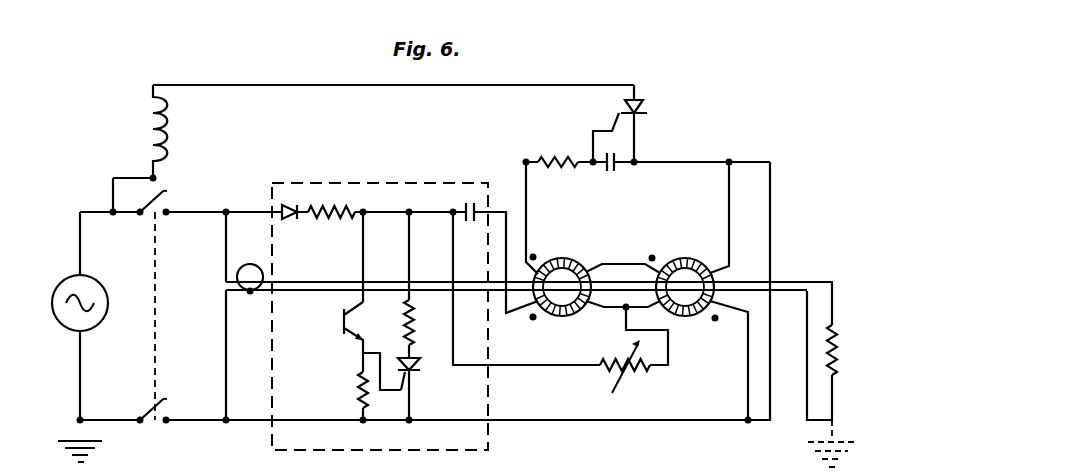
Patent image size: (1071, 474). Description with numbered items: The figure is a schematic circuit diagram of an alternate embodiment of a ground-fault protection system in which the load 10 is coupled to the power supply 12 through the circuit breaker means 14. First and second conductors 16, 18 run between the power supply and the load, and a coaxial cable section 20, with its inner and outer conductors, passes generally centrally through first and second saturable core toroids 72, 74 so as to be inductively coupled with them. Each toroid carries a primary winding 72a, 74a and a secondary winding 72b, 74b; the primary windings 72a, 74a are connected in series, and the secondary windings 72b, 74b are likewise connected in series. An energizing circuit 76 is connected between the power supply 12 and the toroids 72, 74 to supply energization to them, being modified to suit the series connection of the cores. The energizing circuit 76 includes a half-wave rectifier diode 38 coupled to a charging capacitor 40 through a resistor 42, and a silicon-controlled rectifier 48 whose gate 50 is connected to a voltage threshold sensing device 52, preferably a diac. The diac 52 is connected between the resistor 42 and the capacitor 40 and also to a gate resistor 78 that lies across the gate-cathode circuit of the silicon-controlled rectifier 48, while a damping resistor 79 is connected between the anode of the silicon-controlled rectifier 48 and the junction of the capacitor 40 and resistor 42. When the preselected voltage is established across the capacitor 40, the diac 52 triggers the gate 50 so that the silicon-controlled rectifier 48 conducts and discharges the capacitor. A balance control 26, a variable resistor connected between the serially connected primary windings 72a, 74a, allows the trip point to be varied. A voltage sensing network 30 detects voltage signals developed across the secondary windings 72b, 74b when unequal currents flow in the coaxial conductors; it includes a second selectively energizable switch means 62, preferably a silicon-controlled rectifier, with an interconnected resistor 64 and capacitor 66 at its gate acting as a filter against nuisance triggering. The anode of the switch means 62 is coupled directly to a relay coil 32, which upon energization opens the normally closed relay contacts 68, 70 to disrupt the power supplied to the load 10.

The load 10 is at (838, 352).
The power supply 12 is at (65, 280).
The circuit breaker means 14 is at (150, 283).
The first conductor 16 is at (225, 254).
The second conductor 18 is at (225, 326).
The coaxial cable section 20 is at (250, 264).
The balance control 26 is at (628, 390).
The voltage sensing network 30 is at (579, 128).
The relay coil 32 is at (150, 132).
The half-wave rectifier diode 38 is at (291, 220).
The charging capacitor 40 is at (476, 222).
The resistor 42 is at (333, 219).
The silicon-controlled rectifier 48 is at (420, 370).
The gate 50 is at (398, 390).
The voltage threshold sensing device 52 is at (342, 322).
The second selectively energizable switch means 62 is at (646, 110).
The resistor 64 is at (556, 168).
The capacitor 66 is at (617, 170).
The normally closed relay contact 68 is at (168, 193).
The normally closed relay contact 70 is at (168, 401).
The first saturable core toroid 72 is at (576, 262).
The primary winding 72a is at (569, 347).
The secondary winding 72b is at (580, 230).
The second saturable core toroid 74 is at (675, 262).
The primary winding 74a is at (690, 318).
The secondary winding 74b is at (712, 218).
The energizing circuit 76 is at (388, 182).
The gate resistor 78 is at (357, 397).
The damping resistor 79 is at (415, 328).